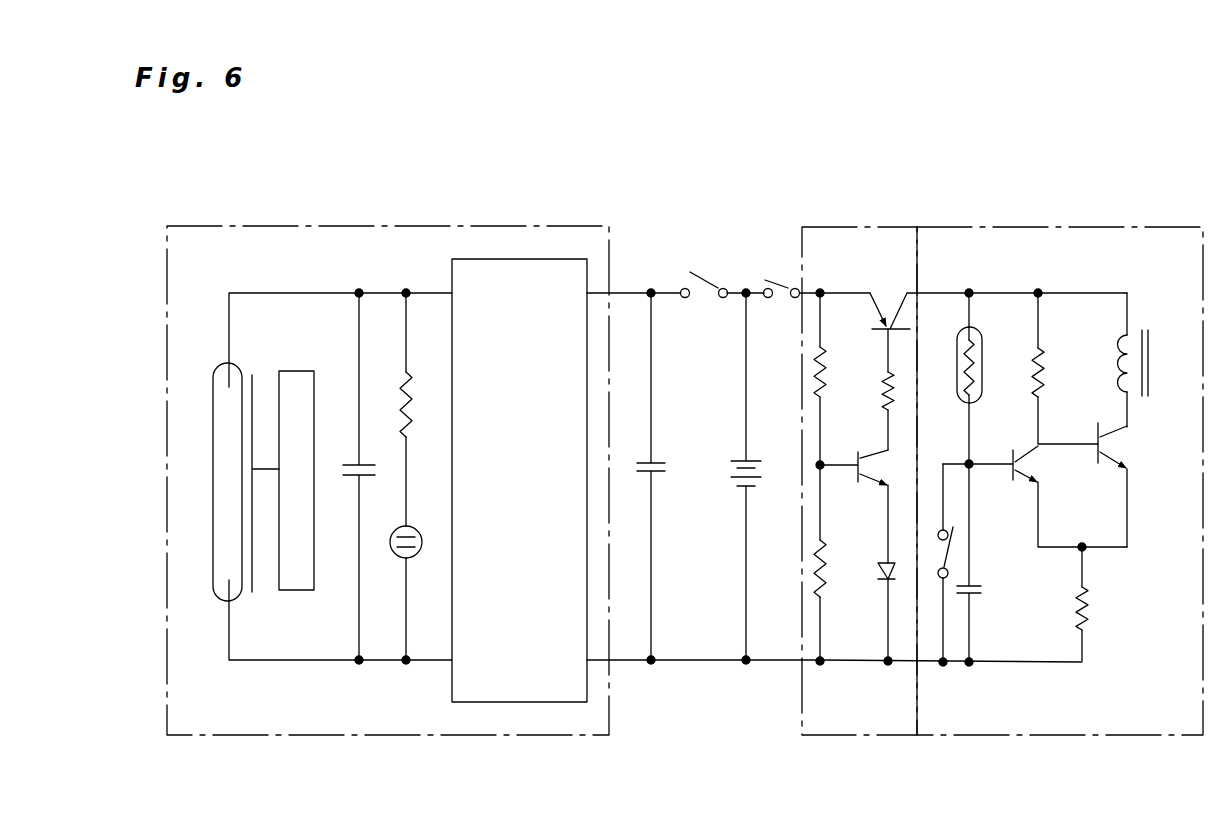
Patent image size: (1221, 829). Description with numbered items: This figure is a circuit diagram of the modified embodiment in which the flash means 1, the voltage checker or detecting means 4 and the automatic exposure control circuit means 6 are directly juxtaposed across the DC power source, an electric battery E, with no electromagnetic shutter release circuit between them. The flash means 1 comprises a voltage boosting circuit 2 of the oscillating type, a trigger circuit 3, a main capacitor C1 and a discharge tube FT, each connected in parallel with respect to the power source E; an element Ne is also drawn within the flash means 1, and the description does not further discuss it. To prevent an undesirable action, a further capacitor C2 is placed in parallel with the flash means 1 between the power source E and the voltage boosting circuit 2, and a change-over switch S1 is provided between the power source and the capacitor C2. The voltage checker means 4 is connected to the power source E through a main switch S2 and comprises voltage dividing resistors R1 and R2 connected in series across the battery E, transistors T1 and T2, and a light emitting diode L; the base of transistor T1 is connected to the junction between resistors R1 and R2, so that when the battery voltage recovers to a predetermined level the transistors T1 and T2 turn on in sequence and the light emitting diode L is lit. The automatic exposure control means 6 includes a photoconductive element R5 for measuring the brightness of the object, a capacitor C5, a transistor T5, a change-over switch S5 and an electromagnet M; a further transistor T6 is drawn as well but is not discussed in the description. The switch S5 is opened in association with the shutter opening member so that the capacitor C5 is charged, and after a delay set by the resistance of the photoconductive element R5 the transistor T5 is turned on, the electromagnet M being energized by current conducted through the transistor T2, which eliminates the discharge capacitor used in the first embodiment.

The flash means 1 is at (372, 226).
The voltage boosting circuit 2 is at (524, 259).
The trigger circuit 3 is at (296, 371).
The voltage checker means 4 is at (860, 228).
The automatic exposure control circuit means 6 is at (1075, 228).
The discharge tube FT is at (206, 482).
The main capacitor C1 is at (344, 468).
The neon lamp Ne is at (420, 548).
The change-over switch S1 is at (705, 290).
The main switch S2 is at (781, 281).
The capacitor C2 is at (664, 470).
The DC power source E is at (732, 470).
The transistor T2 is at (880, 320).
The voltage dividing resistor R1 is at (826, 360).
The transistor T1 is at (878, 449).
The voltage dividing resistor R2 is at (826, 574).
The light emitting diode L is at (877, 573).
The photoconductive element R5 is at (983, 350).
The change-over switch S5 is at (950, 548).
The capacitor C5 is at (976, 594).
The transistor T5 is at (1026, 481).
The electromagnet M is at (1122, 355).
The transistor T6 is at (1116, 437).